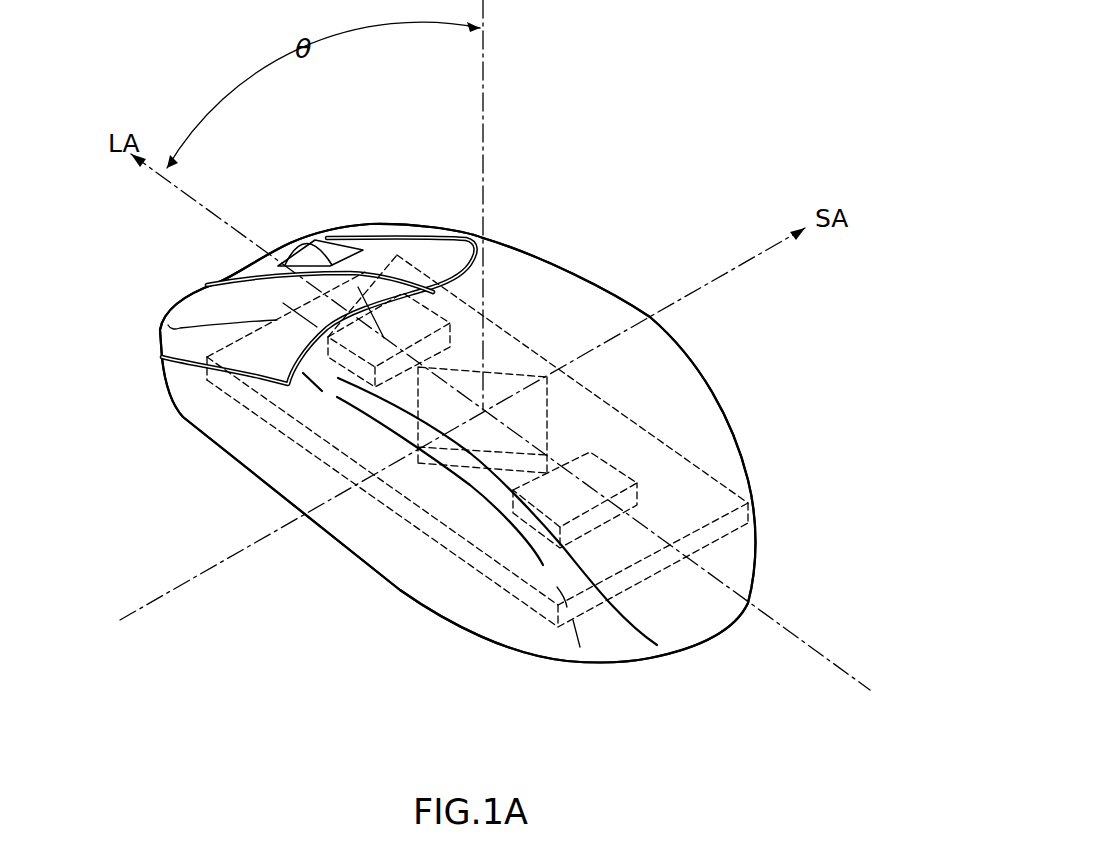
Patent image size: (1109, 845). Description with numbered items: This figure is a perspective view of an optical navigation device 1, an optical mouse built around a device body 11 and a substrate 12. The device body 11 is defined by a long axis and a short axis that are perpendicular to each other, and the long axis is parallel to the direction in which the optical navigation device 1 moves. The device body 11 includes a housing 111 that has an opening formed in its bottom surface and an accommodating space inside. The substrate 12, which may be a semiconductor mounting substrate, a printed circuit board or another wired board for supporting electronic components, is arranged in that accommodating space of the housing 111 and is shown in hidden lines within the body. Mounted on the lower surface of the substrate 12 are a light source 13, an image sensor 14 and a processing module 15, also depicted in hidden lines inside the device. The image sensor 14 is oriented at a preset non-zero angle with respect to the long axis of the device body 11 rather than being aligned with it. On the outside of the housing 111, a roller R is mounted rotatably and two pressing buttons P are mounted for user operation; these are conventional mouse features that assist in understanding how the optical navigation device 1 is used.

The optical navigation device 1 is at (752, 41).
The device body 11 is at (313, 537).
The housing 111 is at (400, 537).
The substrate 12 is at (721, 532).
The light source 13 is at (403, 333).
The image sensor 14 is at (528, 412).
The processing module 15 is at (640, 510).
The pressing buttons P is at (213, 313).
The roller R is at (330, 255).